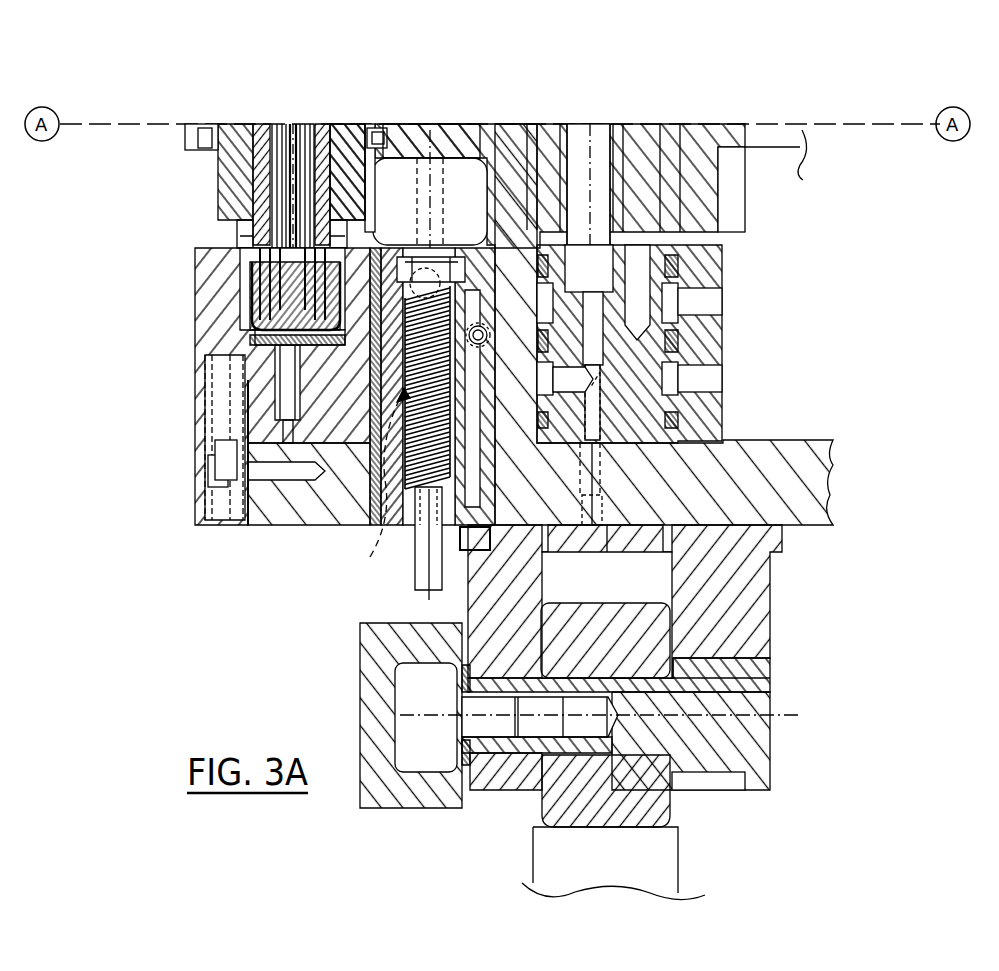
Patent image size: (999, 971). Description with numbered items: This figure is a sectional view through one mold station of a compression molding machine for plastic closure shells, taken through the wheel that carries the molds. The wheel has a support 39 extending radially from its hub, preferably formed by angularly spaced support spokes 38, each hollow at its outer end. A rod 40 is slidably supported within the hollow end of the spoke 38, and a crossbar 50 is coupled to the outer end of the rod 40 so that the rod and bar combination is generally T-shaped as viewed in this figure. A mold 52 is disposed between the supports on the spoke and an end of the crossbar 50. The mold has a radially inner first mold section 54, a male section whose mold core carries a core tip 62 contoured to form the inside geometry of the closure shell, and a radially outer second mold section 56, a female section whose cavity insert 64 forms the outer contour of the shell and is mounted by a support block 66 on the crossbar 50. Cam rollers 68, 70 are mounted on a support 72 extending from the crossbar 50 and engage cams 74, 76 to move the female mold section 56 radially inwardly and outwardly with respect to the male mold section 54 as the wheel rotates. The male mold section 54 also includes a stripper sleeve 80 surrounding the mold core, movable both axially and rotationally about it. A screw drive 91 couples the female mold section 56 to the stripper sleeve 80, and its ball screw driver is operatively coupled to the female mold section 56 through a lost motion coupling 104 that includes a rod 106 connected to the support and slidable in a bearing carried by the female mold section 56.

The support spoke 38 is at (710, 135).
The support 39 is at (750, 196).
The rod 40 is at (637, 352).
The crossbar 50 is at (310, 505).
The mold 52 is at (205, 218).
The first mold section 54 is at (215, 183).
The second mold section 56 is at (200, 275).
The core tip 62 is at (252, 317).
The cavity insert 64 is at (245, 344).
The support block 66 is at (258, 397).
The cam roller 68 is at (628, 795).
The cam roller 70 is at (408, 704).
The support 72 is at (752, 585).
The cam 74 is at (660, 850).
The cam 76 is at (380, 725).
The stripper sleeve 80 is at (357, 132).
The screw drive 91 is at (478, 168).
The lost motion coupling 104 is at (373, 560).
The rod 106 is at (415, 568).